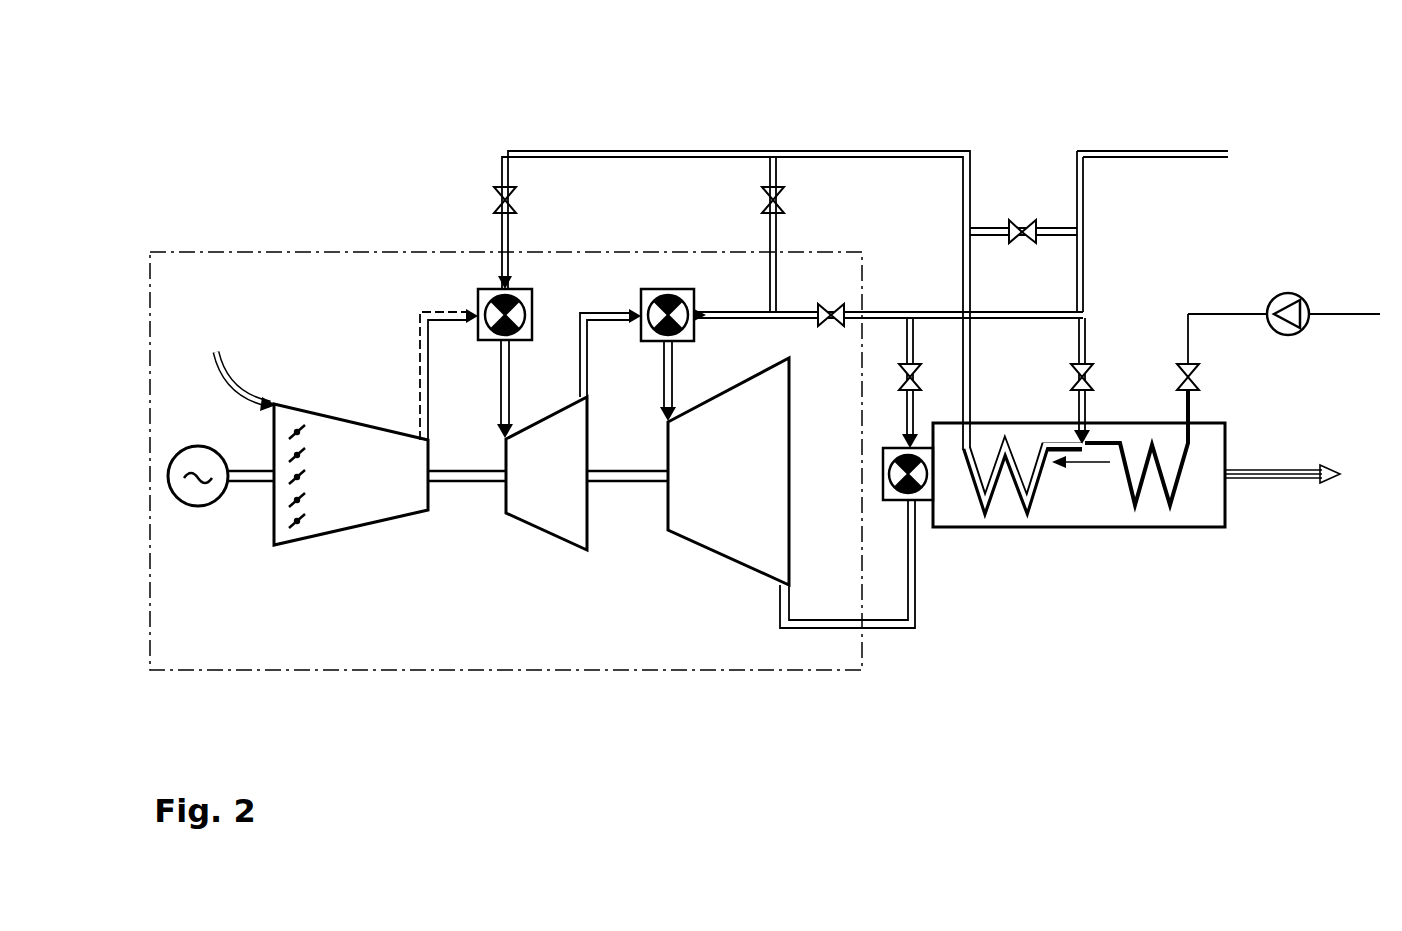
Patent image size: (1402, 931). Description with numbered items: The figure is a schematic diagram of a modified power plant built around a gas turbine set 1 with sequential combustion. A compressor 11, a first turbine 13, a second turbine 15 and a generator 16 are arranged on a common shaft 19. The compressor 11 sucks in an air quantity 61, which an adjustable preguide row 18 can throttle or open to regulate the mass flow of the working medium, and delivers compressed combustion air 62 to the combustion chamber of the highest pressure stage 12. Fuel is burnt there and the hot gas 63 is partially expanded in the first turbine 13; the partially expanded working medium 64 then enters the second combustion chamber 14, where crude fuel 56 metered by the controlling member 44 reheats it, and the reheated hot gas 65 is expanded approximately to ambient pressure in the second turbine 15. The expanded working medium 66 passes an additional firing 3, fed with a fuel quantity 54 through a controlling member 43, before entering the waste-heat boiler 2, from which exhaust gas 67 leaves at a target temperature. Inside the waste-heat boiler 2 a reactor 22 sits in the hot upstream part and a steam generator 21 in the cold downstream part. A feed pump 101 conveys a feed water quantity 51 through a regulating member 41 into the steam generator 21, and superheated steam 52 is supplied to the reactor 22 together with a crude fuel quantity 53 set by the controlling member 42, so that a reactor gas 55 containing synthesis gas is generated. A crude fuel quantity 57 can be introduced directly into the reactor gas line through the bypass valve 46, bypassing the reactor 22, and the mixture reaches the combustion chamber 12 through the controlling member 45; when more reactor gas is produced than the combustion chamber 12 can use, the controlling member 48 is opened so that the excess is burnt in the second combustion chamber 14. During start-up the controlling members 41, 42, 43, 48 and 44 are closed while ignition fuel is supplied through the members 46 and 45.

The gas turbine set 1 is at (530, 670).
The waste-heat boiler 2 is at (1196, 528).
The additional firing 3 is at (893, 512).
The compressor 11 is at (351, 474).
The combustion chamber of the highest pressure stage 12 is at (487, 298).
The first turbine 13 is at (546, 473).
The second combustion chamber 14 is at (666, 305).
The second turbine 15 is at (728, 471).
The generator 16 is at (186, 490).
The adjustable preguide row 18 is at (298, 525).
The common shaft 19 is at (250, 476).
The steam generator 21 is at (1156, 487).
The reactor 22 is at (1003, 480).
The regulating member 41 is at (1206, 377).
The controlling member 42 is at (1100, 381).
The controlling member 43 is at (928, 383).
The controlling member 44 is at (888, 329).
The controlling member 45 is at (531, 200).
The bypass valve 46 is at (1021, 250).
The controlling member 48 is at (791, 234).
The feed water quantity 51 is at (1166, 388).
The superheated steam 52 is at (1080, 462).
The crude fuel quantity 53 is at (1060, 388).
The fuel quantity 54 is at (888, 390).
The reactor gas 55 is at (656, 140).
The crude fuel 56 is at (812, 292).
The crude fuel quantity 57 is at (1045, 210).
The air quantity 61 is at (229, 383).
The compressed combustion air 62 is at (421, 360).
The hot gas 63 is at (503, 390).
The partially expanded working medium 64 is at (600, 313).
The reheated hot gas 65 is at (672, 375).
The expanded working medium 66 is at (883, 628).
The exhaust gas 67 is at (1283, 478).
The feed pump 101 is at (1288, 298).